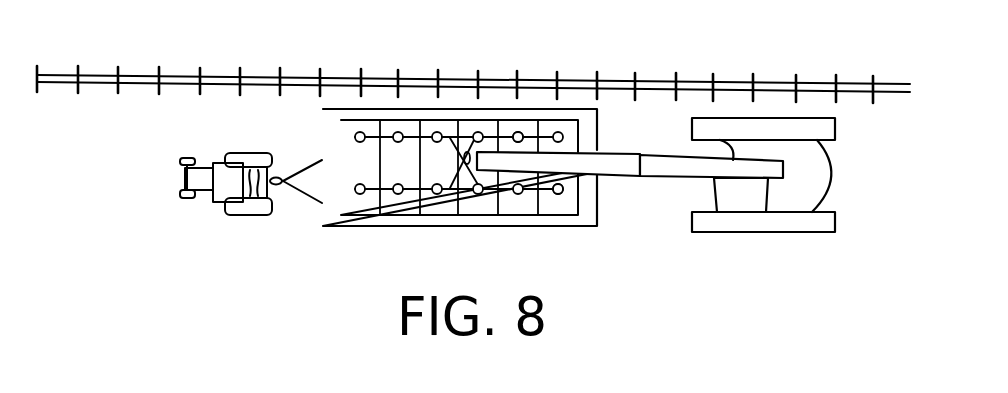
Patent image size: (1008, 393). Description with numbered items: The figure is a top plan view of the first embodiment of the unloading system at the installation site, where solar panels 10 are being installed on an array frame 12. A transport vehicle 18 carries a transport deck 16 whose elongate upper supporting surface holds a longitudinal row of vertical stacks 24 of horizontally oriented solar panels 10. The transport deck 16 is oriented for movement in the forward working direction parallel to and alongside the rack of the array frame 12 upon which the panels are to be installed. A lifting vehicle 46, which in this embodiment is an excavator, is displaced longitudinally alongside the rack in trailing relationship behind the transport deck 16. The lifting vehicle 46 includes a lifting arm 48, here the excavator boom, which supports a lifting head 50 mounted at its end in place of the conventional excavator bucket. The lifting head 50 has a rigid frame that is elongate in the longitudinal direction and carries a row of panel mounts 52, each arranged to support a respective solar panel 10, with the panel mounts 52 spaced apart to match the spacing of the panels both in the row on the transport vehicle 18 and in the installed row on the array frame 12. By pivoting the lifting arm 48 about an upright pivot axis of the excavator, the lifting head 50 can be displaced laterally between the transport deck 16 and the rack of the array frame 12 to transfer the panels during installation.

The solar panels 10 is at (366, 160).
The array frame 12 is at (143, 73).
The transport deck 16 is at (508, 222).
The transport vehicle 18 is at (240, 222).
The vertical stacks 24 is at (445, 205).
The lifting vehicle 46 is at (800, 197).
The lifting arm 48 is at (664, 168).
The lifting head 50 is at (521, 130).
The panel mounts 52 is at (565, 211).